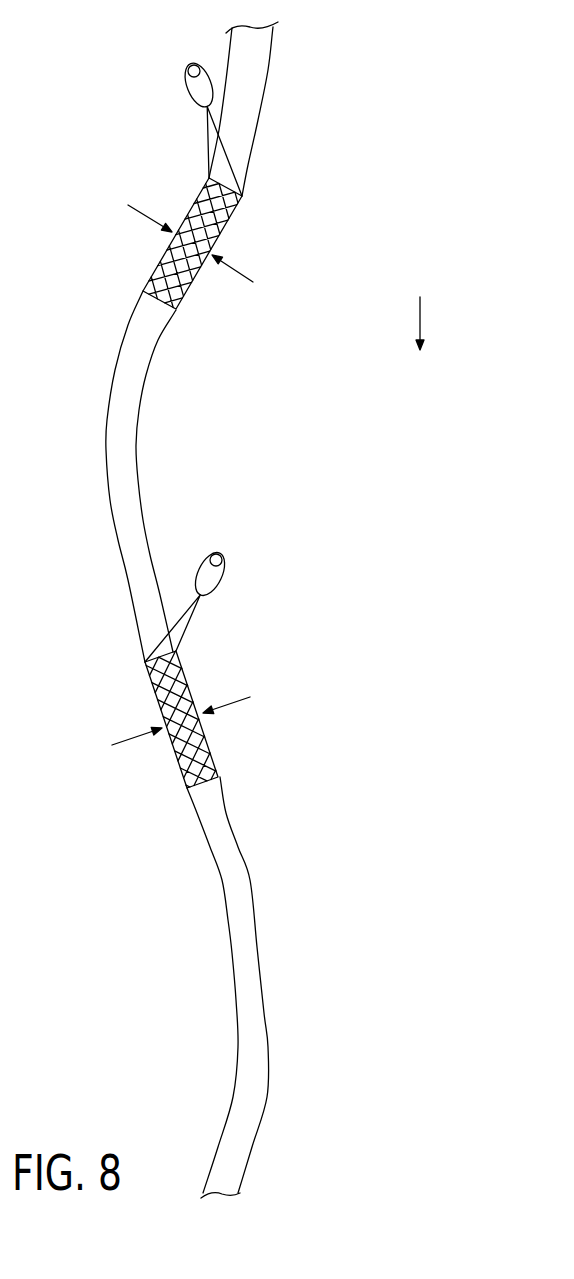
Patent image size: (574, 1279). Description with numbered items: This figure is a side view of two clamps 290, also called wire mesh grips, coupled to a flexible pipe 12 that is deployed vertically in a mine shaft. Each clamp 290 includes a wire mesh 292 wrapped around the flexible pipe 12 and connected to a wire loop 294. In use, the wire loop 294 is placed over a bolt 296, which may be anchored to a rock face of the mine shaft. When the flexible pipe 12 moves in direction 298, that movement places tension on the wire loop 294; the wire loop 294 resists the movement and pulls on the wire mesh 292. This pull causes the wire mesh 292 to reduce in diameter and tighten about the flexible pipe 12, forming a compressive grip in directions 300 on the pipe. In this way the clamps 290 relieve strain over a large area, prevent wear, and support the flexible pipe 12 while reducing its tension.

The flexible pipe 12 is at (238, 953).
The clamps 290 is at (309, 231).
The wire mesh 292 is at (232, 243).
The wire loop 294 is at (207, 125).
The bolt 296 is at (188, 67).
The direction 298 is at (417, 318).
The directions 300 is at (145, 223).